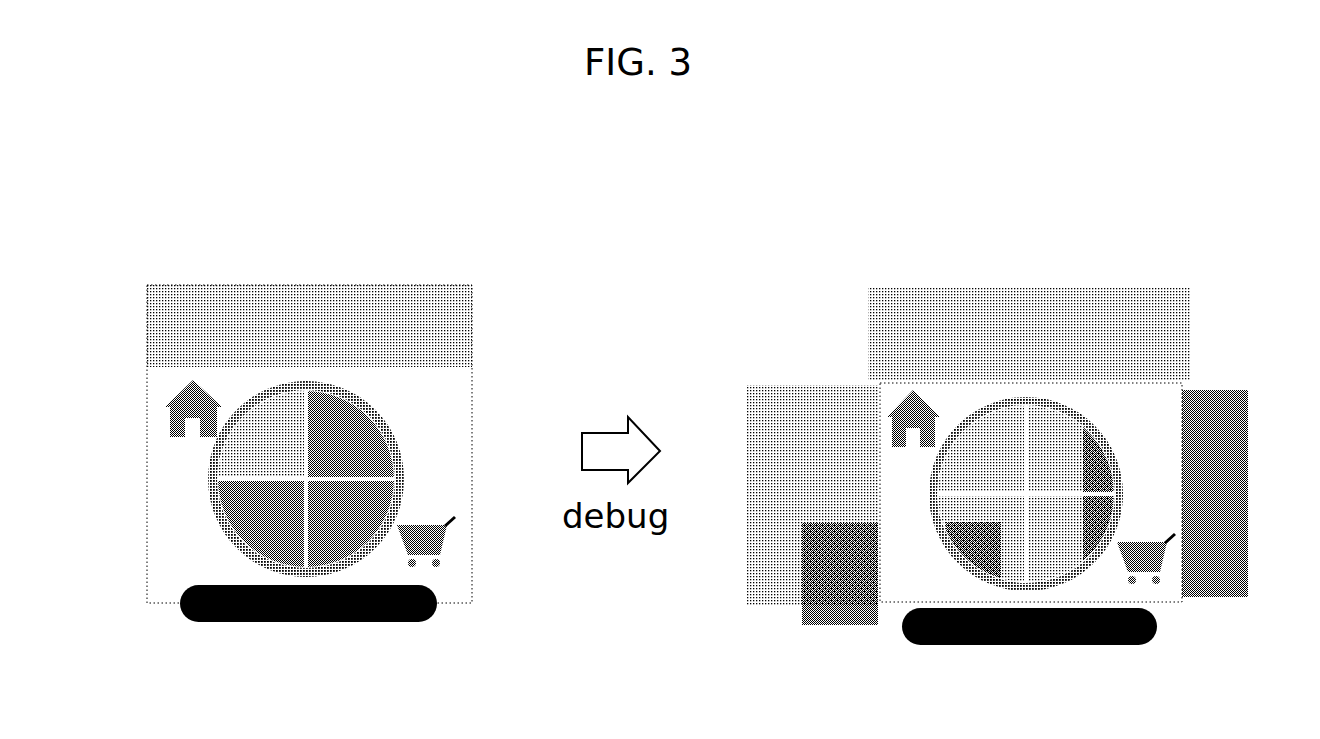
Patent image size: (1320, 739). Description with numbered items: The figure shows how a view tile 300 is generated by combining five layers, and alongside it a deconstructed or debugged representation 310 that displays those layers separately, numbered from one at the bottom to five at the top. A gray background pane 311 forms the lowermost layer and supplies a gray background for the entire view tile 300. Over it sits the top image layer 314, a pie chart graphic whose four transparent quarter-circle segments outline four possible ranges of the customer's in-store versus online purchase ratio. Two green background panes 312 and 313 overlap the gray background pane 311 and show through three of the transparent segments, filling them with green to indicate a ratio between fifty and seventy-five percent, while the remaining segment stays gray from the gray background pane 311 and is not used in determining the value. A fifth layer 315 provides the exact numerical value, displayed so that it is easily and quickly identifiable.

The view tile 300 is at (138, 250).
The deconstructed or debugged representation 310 is at (890, 262).
The gray background pane 311 is at (818, 385).
The green background pane 312 is at (1245, 540).
The green background pane 313 is at (875, 615).
The top image layer 314 is at (1163, 402).
The fifth layer 315 is at (1137, 645).